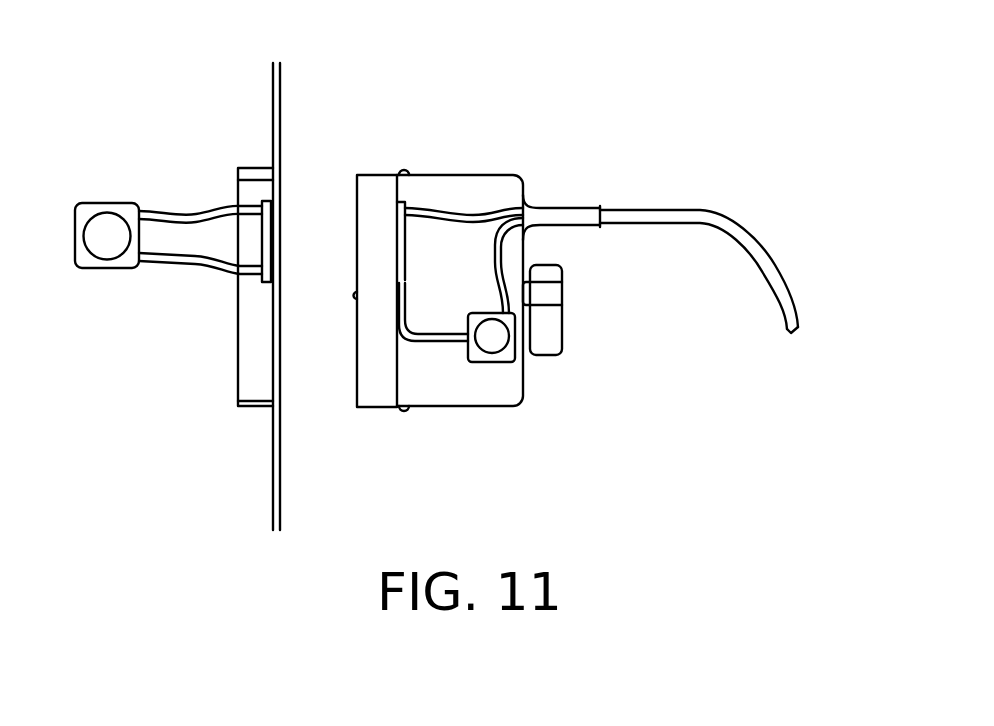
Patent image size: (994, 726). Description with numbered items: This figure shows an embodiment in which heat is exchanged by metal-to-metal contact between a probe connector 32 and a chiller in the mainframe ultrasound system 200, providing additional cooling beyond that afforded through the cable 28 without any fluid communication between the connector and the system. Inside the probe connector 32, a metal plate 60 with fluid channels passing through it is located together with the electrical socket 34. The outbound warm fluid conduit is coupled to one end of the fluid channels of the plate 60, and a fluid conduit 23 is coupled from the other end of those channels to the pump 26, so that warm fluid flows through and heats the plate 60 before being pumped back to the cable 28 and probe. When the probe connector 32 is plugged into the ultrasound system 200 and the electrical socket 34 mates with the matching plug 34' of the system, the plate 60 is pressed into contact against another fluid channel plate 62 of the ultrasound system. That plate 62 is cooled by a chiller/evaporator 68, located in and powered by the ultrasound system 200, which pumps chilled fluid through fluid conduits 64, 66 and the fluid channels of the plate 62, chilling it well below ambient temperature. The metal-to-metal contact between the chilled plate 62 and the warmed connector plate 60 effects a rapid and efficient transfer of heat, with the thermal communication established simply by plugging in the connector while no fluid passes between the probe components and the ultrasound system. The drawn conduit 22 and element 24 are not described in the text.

The ultrasound system 200 is at (282, 492).
The matching plug 34' is at (222, 287).
The fluid channel plate 62 is at (266, 242).
The fluid conduit 64 is at (186, 210).
The fluid conduit 66 is at (186, 263).
The chiller/evaporator 68 is at (105, 203).
The electrical socket 34 is at (374, 253).
The probe connector 32 is at (537, 170).
The arm 24 is at (447, 209).
The metal plate 60 is at (405, 244).
The cable 22 is at (493, 278).
The fluid conduit 23 is at (441, 345).
The pump 26 is at (492, 345).
The cable 28 is at (771, 245).